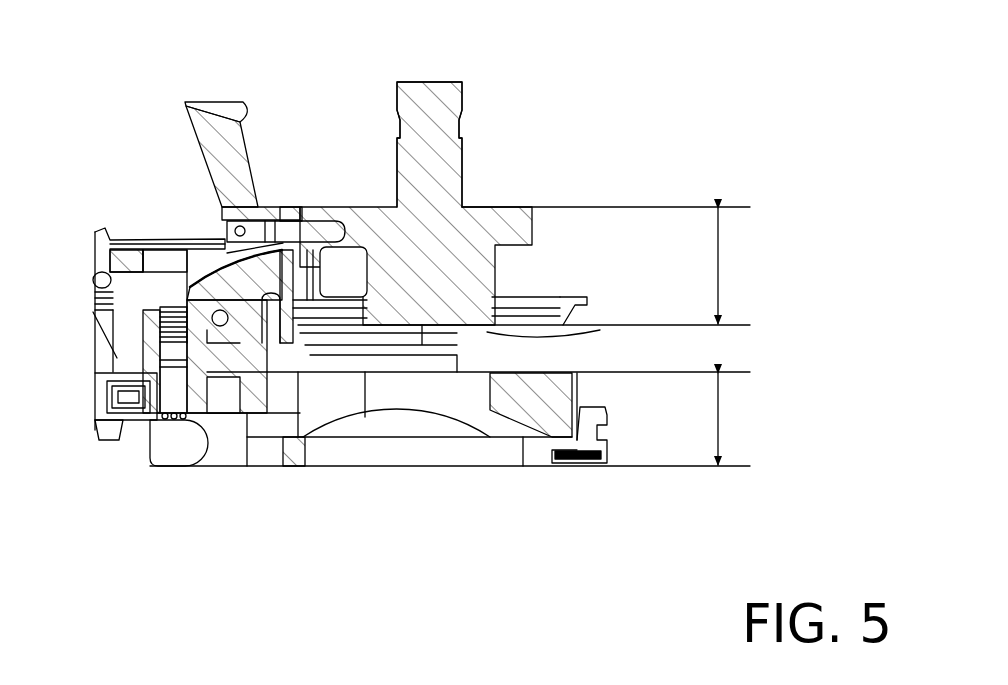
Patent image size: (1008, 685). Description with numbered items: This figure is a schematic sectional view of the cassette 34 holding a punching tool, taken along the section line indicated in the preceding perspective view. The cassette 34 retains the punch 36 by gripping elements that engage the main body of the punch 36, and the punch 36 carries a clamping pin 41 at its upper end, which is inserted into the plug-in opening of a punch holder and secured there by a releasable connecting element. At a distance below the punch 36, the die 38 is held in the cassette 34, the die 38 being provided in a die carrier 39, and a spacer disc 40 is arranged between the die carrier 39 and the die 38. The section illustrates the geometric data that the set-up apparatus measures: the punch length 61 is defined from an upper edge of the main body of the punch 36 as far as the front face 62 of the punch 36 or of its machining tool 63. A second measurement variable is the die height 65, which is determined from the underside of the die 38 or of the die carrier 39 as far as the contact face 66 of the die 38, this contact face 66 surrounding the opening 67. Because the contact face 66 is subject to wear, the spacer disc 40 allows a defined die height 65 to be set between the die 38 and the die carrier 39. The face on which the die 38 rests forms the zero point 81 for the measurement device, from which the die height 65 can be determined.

The cassette 34 is at (97, 184).
The punch 36 is at (548, 130).
The die 38 is at (580, 380).
The die carrier 39 is at (606, 418).
The spacer disc 40 is at (523, 440).
The clamping pin 41 is at (462, 97).
The punch length 61 is at (718, 262).
The front face 62 is at (562, 332).
The machining tool 63 is at (434, 175).
The die height 65 is at (718, 418).
The contact face 66 is at (555, 365).
The opening 67 is at (452, 402).
The zero point 81 is at (198, 450).